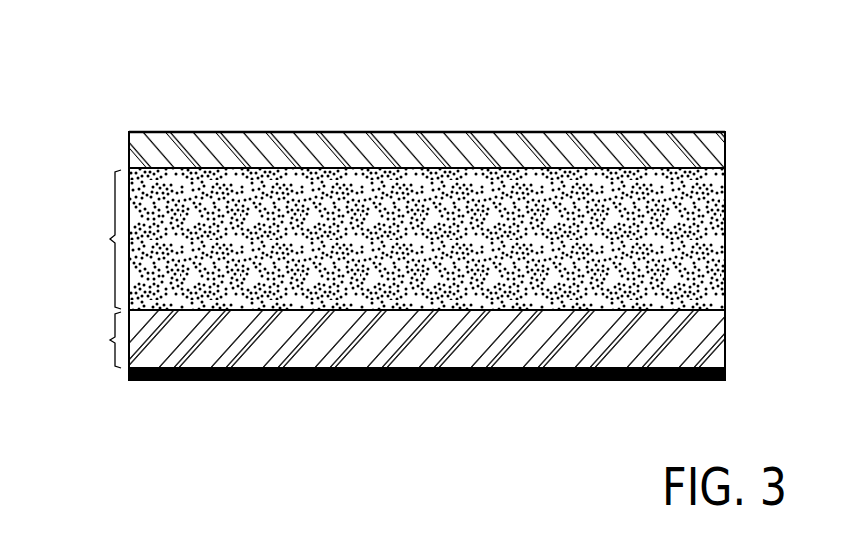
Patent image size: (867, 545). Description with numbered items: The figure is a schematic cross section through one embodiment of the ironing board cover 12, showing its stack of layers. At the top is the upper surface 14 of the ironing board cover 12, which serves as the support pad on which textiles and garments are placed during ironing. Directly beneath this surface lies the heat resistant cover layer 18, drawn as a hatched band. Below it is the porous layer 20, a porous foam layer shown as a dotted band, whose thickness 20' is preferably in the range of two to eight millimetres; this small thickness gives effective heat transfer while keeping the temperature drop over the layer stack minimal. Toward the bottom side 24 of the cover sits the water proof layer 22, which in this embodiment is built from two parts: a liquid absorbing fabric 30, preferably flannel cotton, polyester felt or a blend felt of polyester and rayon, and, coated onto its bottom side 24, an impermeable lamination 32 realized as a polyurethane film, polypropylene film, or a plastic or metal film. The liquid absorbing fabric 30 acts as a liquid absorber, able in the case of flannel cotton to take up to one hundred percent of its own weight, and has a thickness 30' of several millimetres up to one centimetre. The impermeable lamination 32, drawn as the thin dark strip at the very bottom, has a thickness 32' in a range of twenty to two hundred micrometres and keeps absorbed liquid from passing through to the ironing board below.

The ironing board cover 12 is at (110, 84).
The upper surface 14 is at (384, 124).
The heat resistant cover layer 18 is at (721, 150).
The porous layer 20 is at (461, 239).
The thickness of the porous layer 20' is at (97, 239).
The water proof layer 22 is at (721, 345).
The bottom side 24 is at (438, 388).
The liquid absorbing fabric 30 is at (378, 335).
The thickness of the liquid absorbing fabric 30' is at (98, 340).
The impermeable lamination 32 is at (427, 418).
The thickness of the impermeable lamination 32' is at (92, 393).